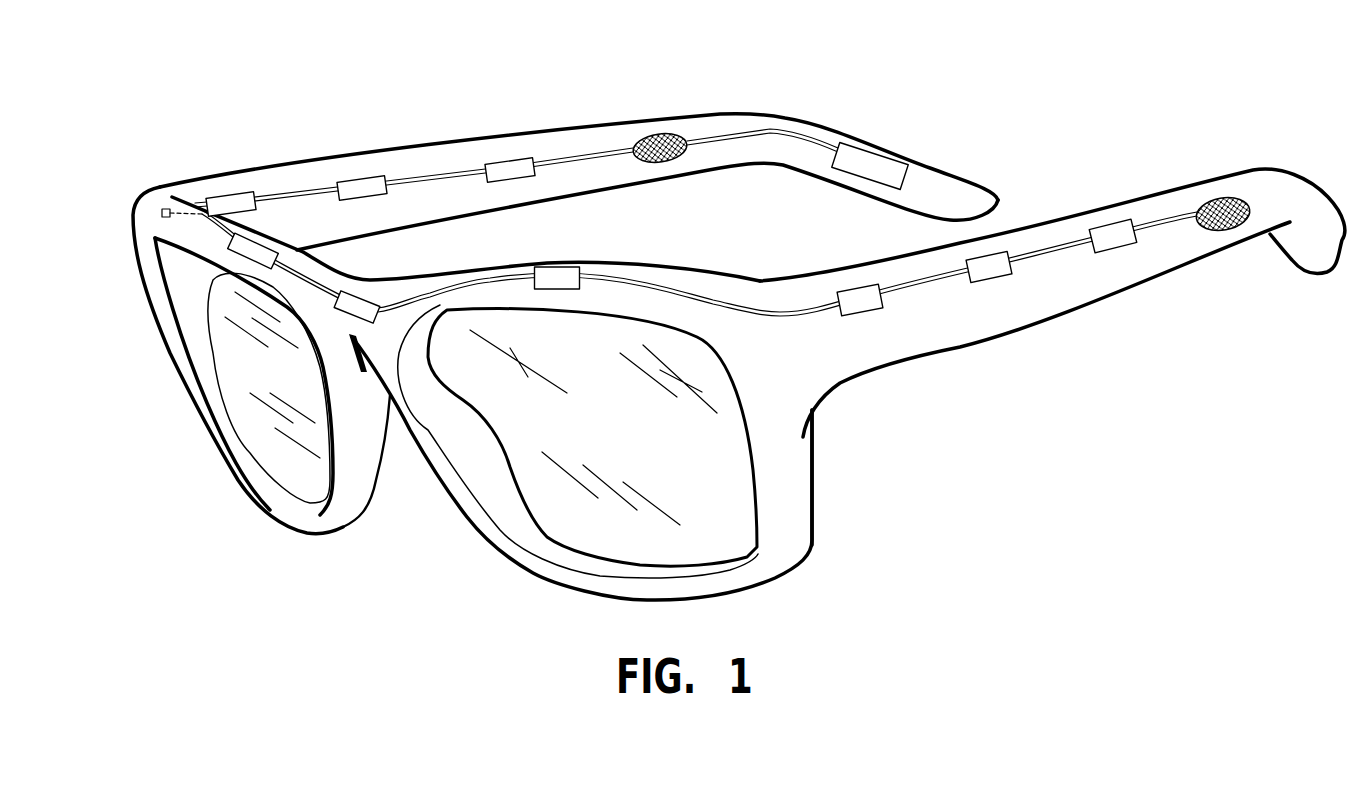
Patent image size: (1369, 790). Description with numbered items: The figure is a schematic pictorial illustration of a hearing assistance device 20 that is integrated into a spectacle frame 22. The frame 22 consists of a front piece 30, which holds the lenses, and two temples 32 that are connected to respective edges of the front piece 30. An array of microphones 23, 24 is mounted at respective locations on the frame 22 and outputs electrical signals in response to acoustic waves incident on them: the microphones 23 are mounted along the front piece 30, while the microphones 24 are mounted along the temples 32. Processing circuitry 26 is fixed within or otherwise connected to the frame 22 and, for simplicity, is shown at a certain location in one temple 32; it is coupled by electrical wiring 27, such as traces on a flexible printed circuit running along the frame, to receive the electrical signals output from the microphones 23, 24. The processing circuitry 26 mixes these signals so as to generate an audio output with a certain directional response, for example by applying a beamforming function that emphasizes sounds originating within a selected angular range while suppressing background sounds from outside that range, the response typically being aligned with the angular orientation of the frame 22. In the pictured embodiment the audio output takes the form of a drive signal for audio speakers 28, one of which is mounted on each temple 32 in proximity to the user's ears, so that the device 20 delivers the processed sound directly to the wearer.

The hearing assistance device 20 is at (703, 338).
The spectacle frame 22 is at (121, 160).
The microphones 23 is at (265, 247).
The microphones 24 is at (240, 190).
The processing circuitry 26 is at (893, 158).
The electrical wiring 27 is at (767, 118).
The audio speakers 28 is at (665, 133).
The front piece 30 is at (812, 543).
The temples 32 is at (697, 175).